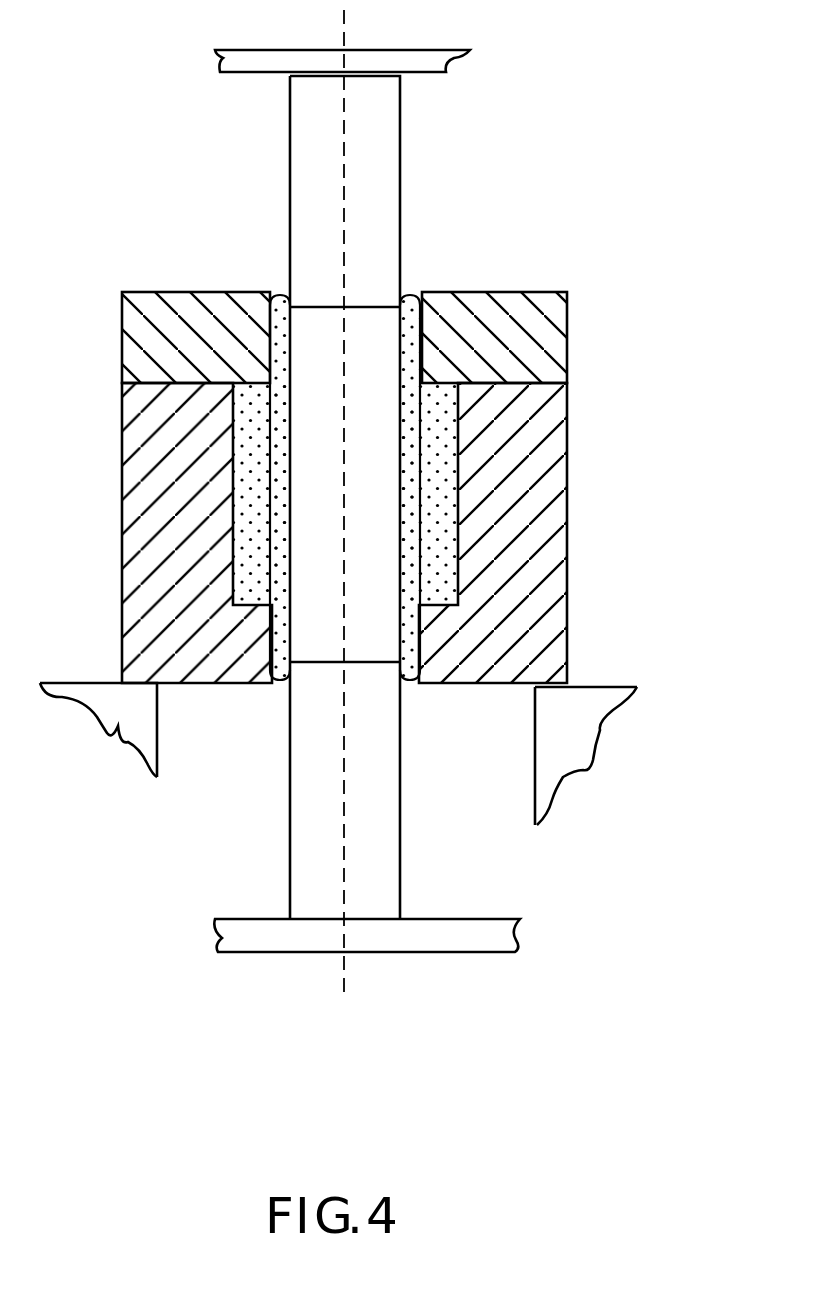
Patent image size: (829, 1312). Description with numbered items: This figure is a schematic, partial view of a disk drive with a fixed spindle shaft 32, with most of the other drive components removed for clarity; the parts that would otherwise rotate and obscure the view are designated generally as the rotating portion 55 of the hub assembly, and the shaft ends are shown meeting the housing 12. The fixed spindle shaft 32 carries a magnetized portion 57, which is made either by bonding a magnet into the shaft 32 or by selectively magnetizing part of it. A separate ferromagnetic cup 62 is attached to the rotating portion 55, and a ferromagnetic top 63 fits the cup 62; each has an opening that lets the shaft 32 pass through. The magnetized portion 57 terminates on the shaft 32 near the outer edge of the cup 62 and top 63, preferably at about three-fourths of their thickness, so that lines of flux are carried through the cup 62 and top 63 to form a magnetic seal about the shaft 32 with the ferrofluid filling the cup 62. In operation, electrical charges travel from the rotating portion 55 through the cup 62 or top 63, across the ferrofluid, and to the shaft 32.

The housing 12 is at (435, 63).
The spindle shaft 32 is at (391, 137).
The rotating portion 55 is at (117, 720).
The magnetized portion 57 is at (312, 643).
The cup 62 is at (559, 578).
The top 63 is at (557, 358).